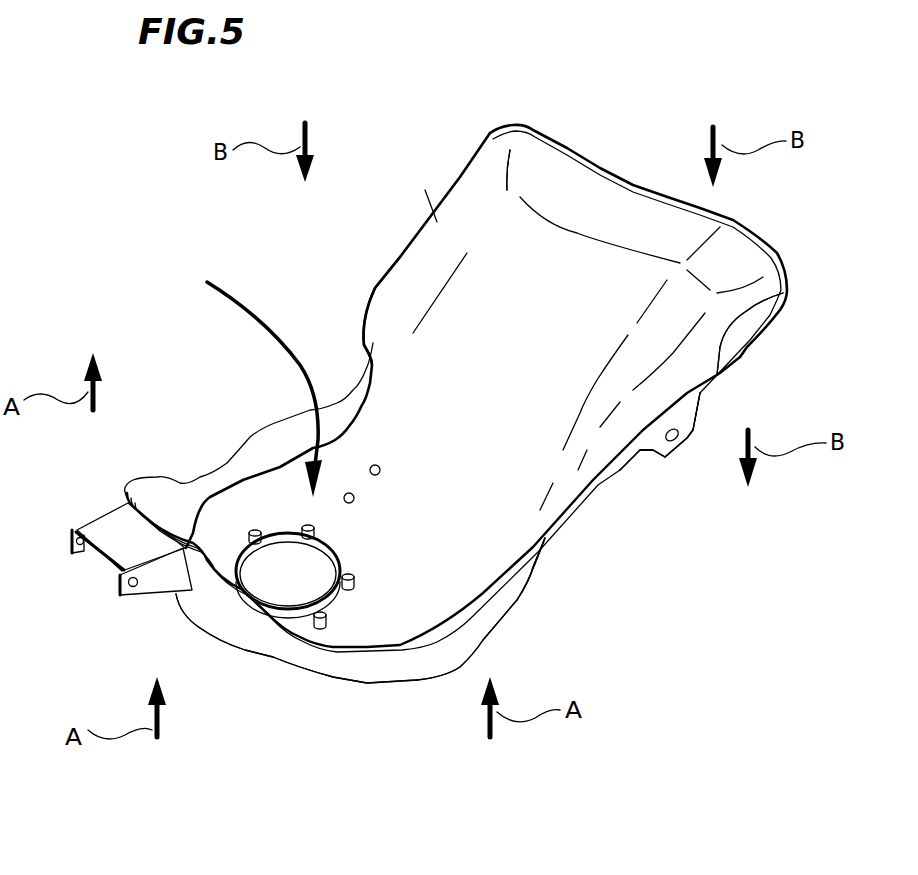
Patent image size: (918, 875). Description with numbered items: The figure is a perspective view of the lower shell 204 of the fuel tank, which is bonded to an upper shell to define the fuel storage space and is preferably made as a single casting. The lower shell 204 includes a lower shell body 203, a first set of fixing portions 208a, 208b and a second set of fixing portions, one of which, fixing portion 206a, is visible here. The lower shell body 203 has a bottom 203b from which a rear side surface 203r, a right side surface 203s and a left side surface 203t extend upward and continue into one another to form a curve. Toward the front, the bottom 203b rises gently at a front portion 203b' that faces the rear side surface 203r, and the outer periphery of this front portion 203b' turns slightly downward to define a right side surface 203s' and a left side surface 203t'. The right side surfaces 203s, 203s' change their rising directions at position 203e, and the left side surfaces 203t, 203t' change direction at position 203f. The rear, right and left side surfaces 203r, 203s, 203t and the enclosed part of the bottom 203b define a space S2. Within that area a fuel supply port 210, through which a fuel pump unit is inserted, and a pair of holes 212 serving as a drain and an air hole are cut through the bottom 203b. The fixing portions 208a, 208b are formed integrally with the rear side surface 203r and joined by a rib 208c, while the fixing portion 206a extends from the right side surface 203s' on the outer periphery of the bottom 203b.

The lower shell body 203 is at (548, 260).
The lower shell 204 is at (457, 132).
The left side surface 203t is at (249, 424).
The left side surface 203t' is at (392, 193).
The position 203f is at (365, 340).
The rear side surface 203r is at (229, 644).
The right side surface 203s is at (523, 609).
The right side surface 203s' is at (797, 290).
The bottom 203b is at (361, 732).
The front portion 203b' is at (739, 431).
The position 203e is at (547, 540).
The fixing portion 206a is at (667, 455).
The fixing portion 208a is at (153, 587).
The fixing portion 208b is at (82, 553).
The rib 208c is at (110, 523).
The fuel supply port 210 is at (273, 514).
The holes 212 is at (347, 492).
The space S2 is at (248, 373).